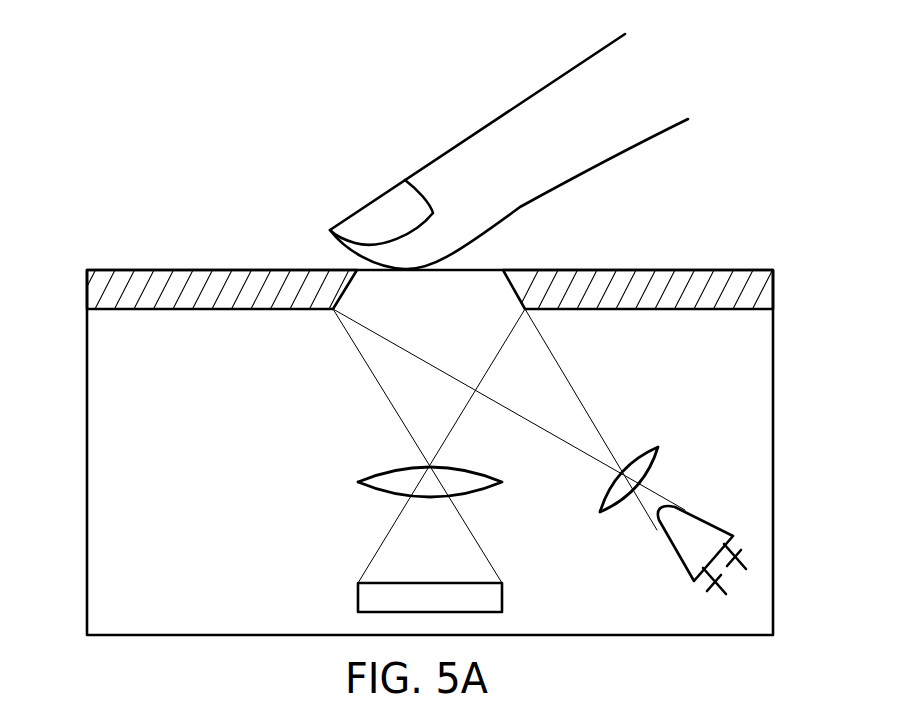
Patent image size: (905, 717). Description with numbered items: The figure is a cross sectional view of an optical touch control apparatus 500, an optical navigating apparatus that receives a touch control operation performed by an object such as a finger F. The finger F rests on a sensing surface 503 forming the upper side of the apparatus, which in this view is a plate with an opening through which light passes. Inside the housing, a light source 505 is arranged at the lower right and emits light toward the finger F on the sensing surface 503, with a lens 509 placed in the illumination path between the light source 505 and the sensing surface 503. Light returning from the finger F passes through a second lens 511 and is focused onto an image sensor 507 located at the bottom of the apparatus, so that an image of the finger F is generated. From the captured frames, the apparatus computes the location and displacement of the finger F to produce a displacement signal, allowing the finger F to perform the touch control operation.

The optical touch control apparatus 500 is at (200, 128).
The sensing surface 503 is at (192, 290).
The finger F is at (477, 143).
The light source 505 is at (731, 531).
The lens 509 is at (650, 452).
The lens 511 is at (380, 488).
The image sensor 507 is at (358, 594).